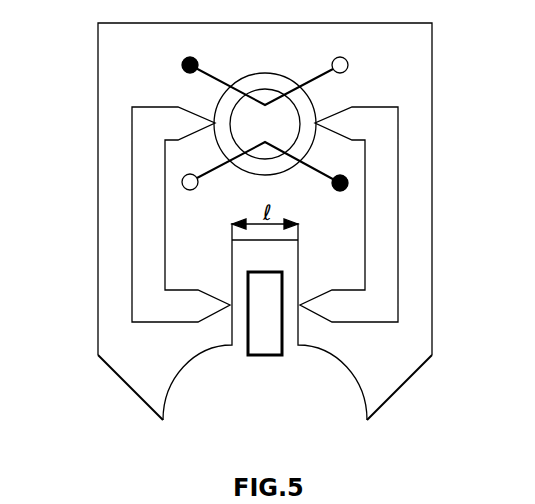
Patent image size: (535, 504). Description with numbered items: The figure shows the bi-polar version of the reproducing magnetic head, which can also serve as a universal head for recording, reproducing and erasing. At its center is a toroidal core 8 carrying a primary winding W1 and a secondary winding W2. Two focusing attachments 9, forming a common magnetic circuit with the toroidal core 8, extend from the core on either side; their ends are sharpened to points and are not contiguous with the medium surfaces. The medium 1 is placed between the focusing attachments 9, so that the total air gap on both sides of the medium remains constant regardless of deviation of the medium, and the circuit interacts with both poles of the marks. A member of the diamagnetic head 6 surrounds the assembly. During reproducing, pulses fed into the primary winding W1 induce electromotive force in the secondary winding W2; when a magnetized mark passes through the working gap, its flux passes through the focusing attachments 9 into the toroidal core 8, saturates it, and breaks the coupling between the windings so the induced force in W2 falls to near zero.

The medium 1 is at (263, 340).
The member of the diamagnetic head 6 is at (115, 223).
The toroidal core 8 is at (217, 137).
The focusing attachments 9 is at (382, 223).
The primary winding W1 is at (252, 38).
The secondary winding W2 is at (335, 225).